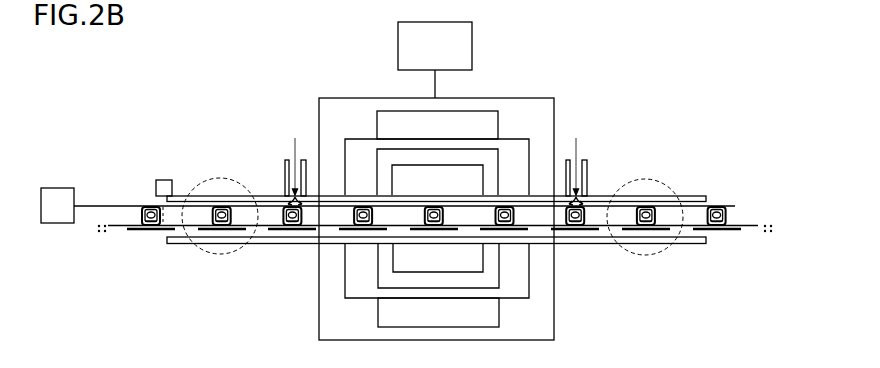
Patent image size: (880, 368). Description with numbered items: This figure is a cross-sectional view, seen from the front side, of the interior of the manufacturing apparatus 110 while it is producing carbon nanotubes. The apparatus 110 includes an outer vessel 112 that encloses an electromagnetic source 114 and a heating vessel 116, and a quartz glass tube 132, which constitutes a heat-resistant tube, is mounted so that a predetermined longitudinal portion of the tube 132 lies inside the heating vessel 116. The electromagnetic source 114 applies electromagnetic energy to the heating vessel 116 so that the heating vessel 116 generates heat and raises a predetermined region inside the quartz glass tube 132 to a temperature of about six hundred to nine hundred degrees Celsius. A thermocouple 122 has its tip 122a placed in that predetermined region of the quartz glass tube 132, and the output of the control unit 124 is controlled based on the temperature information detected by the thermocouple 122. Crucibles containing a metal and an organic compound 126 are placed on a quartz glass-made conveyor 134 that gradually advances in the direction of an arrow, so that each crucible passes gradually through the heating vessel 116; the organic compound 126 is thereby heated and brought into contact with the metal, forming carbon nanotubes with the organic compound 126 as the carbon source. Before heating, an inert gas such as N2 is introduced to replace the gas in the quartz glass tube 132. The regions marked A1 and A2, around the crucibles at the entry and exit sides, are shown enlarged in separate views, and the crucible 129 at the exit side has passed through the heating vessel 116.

The manufacturing apparatus 110 is at (567, 42).
The outer vessel 112 is at (546, 97).
The electromagnetic source 114 is at (499, 119).
The heating vessel 116 is at (378, 275).
The thermocouple 122 is at (55, 224).
The tip of the thermocouple 122a is at (434, 206).
The control unit 124 is at (473, 42).
The organic compound 126 is at (219, 222).
The substrate after treatment 129 is at (644, 222).
The quartz glass tube 132 is at (687, 195).
The quartz glass-made conveyor 134 is at (720, 244).
The portion indicated by symbol A1 is at (220, 178).
The portion indicated by symbol A2 is at (645, 179).
The nitrogen gas nozzle N2 is at (435, 161).